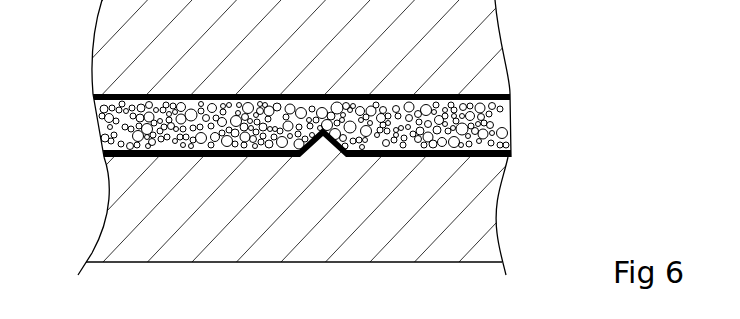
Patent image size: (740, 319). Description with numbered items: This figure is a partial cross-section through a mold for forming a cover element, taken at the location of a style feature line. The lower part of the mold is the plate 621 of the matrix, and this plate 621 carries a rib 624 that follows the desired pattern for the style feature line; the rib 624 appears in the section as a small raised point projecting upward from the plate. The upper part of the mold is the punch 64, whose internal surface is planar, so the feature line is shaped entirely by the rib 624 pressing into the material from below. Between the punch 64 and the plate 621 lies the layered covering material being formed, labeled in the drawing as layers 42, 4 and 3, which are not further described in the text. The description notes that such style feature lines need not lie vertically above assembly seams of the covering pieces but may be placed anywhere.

The punch 64 is at (477, 43).
The plate 621 is at (480, 212).
The upper adhesive layer 42 is at (92, 93).
The porous layer 4 is at (100, 122).
The lower adhesive layer 3 is at (103, 155).
The rib 624 is at (318, 142).